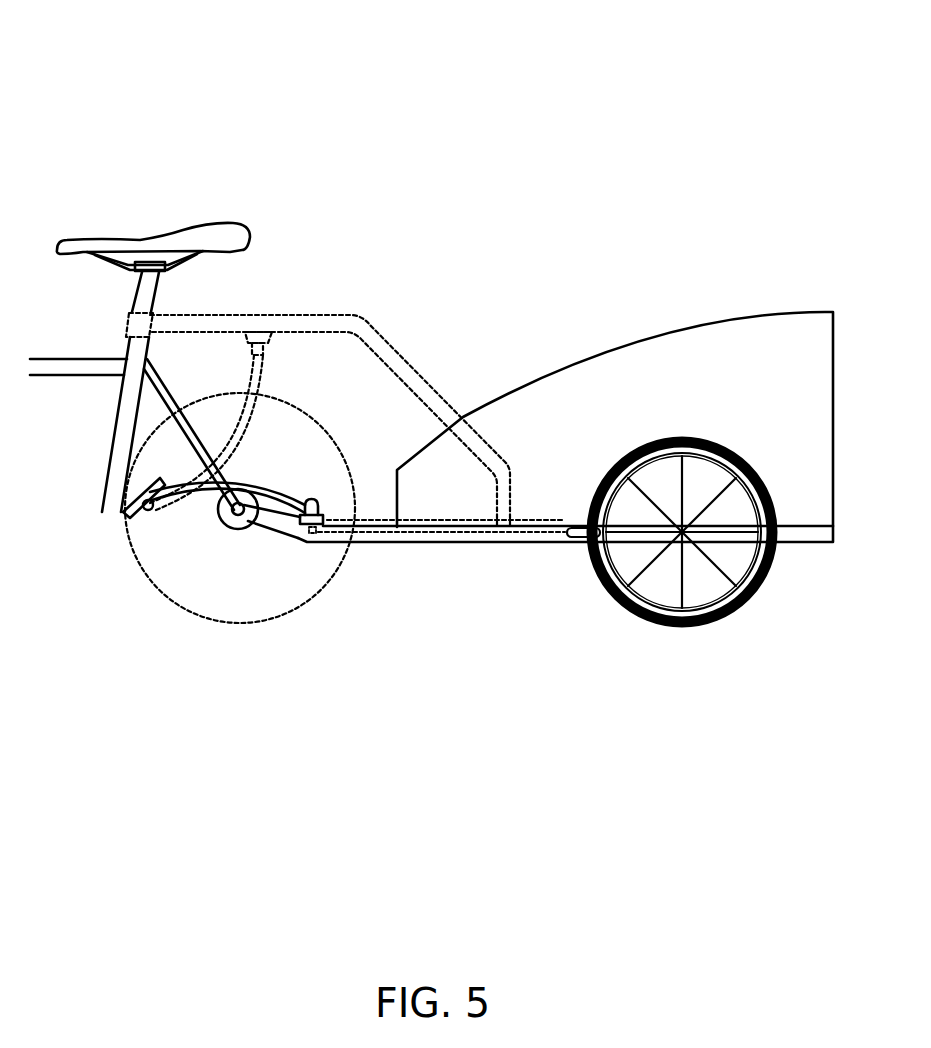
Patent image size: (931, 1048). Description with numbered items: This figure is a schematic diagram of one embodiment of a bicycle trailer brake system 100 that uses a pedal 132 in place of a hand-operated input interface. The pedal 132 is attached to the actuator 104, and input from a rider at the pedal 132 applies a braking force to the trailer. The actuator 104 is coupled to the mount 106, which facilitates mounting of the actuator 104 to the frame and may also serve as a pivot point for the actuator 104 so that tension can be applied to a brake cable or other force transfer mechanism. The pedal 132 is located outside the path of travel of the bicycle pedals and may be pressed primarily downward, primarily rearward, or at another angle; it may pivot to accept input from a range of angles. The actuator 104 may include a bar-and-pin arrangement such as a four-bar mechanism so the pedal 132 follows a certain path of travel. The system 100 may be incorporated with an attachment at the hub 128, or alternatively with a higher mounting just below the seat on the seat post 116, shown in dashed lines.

The bicycle trailer brake system 100 is at (176, 64).
The actuator 104 is at (266, 481).
The mount 106 is at (315, 500).
The seat post 116 is at (145, 340).
The hub 128 is at (242, 517).
The pedal 132 is at (137, 512).